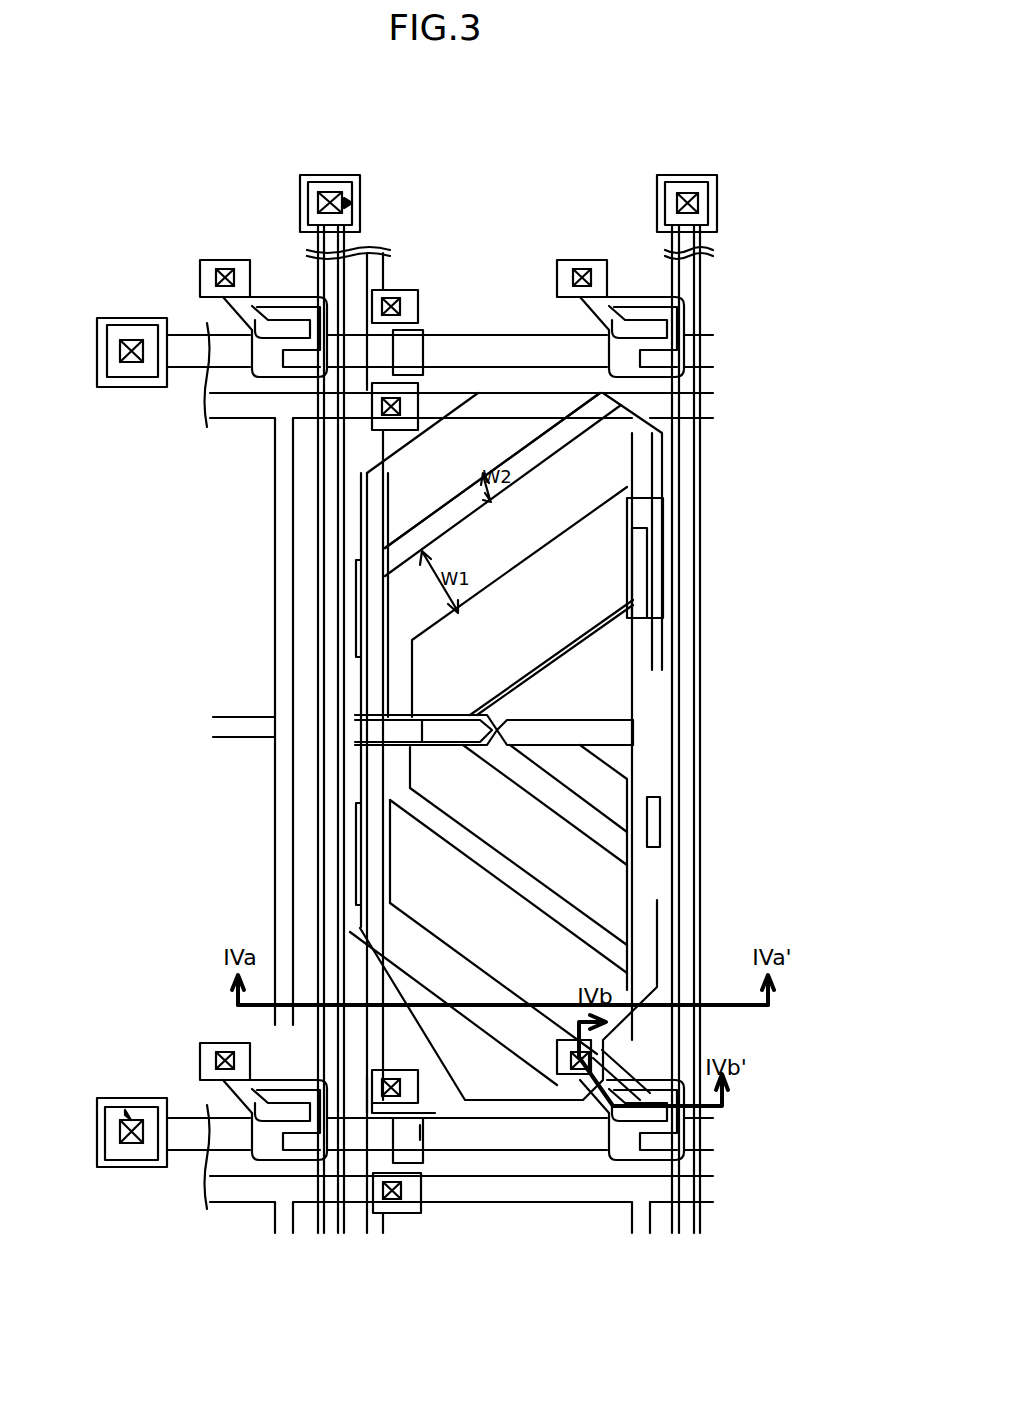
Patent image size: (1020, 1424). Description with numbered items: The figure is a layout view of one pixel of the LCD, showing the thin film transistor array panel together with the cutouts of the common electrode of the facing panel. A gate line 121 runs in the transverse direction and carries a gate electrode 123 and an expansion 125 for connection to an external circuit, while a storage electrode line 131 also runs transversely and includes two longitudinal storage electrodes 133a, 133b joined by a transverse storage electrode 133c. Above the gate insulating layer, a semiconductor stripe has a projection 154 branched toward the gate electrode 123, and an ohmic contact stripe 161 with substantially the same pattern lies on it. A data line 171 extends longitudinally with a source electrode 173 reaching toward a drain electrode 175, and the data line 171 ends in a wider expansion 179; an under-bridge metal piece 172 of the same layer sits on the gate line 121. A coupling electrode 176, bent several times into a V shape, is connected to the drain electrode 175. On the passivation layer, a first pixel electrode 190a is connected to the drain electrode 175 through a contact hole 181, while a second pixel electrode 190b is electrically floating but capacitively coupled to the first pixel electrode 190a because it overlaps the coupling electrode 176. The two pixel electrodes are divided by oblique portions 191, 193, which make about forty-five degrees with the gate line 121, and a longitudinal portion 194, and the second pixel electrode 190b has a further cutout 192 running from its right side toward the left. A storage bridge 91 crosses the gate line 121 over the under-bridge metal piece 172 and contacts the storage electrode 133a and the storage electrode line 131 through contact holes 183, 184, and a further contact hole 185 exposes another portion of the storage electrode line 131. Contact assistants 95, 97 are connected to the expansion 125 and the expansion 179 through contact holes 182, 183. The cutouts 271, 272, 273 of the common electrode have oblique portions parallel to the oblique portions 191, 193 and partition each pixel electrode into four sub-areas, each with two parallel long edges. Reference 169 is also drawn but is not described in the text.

The storage bridge 91 is at (427, 1141).
The contact assistant 95 is at (97, 1137).
The contact assistant 97 is at (310, 178).
The gate line 121 is at (405, 352).
The gate electrode 123 is at (628, 1156).
The expansion 125 is at (135, 1164).
The storage electrode line 131 is at (443, 401).
The storage electrode 133a is at (370, 619).
The storage electrode 133b is at (650, 526).
The transverse storage electrode 133c is at (442, 745).
The projection 154 is at (585, 1159).
The ohmic contact stripe 161 is at (693, 586).
The data pad 169 is at (300, 201).
The data line 171 is at (699, 701).
The under-bridge metal piece 172 is at (375, 1211).
The source electrode 173 is at (654, 1141).
The drain electrode 175 is at (573, 1101).
The coupling electrode 176 is at (640, 806).
The expansion 179 is at (343, 180).
The contact hole 181 is at (556, 1063).
The contact hole 182 is at (128, 1114).
The contact hole 183 is at (352, 204).
The contact hole 184 is at (404, 1070).
The contact hole 185 is at (399, 1214).
The first pixel electrode 190a is at (527, 1107).
The second pixel electrode 190b is at (502, 861).
The oblique portion 191 is at (438, 852).
The cutout 192 is at (580, 790).
The oblique portion 193 is at (493, 578).
The longitudinal portion 194 is at (426, 697).
The cutout 271 is at (538, 986).
The cutout 272 is at (498, 797).
The cutout 273 is at (548, 477).